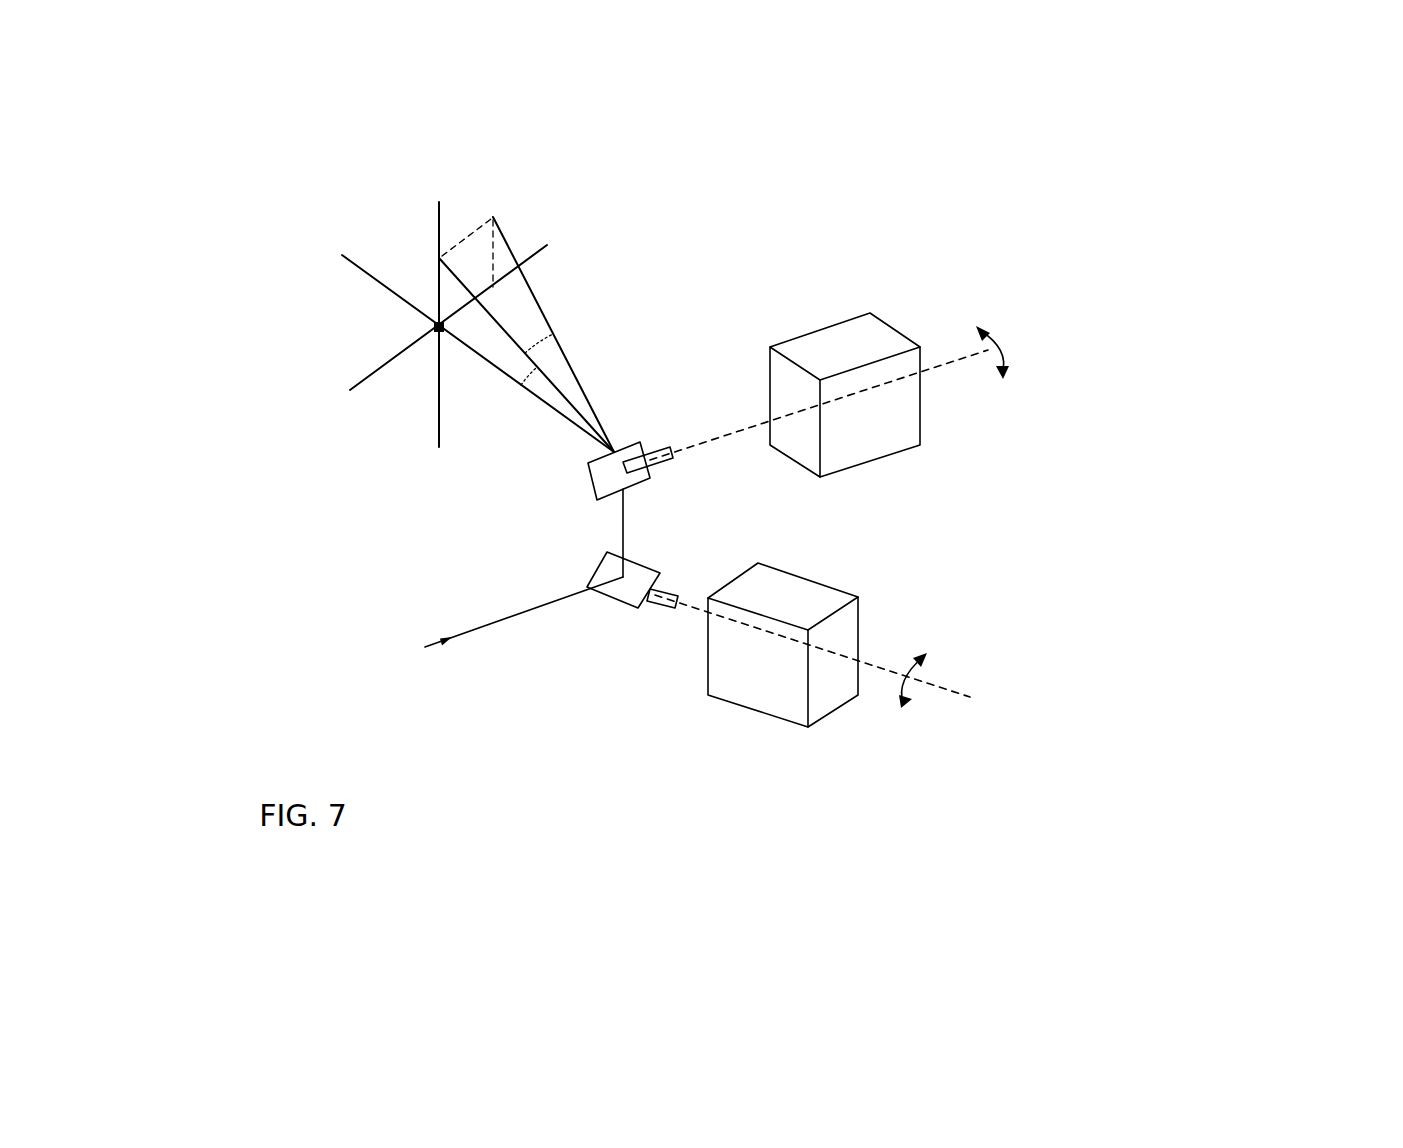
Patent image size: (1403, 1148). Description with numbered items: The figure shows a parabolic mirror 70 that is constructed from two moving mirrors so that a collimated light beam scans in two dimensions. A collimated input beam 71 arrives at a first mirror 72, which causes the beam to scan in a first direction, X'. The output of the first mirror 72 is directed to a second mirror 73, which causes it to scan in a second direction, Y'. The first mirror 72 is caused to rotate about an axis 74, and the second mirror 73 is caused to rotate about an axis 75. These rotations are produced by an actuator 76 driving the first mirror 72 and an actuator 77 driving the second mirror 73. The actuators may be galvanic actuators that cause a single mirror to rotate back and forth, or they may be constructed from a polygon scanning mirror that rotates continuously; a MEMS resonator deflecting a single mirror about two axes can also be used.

The parabolic mirror 70 is at (1244, 219).
The input beam 71 is at (525, 615).
The first mirror 72 is at (625, 587).
The second mirror 73 is at (605, 483).
The axis 74 is at (693, 605).
The axis 75 is at (727, 443).
The actuator 76 is at (777, 687).
The actuator 77 is at (897, 417).